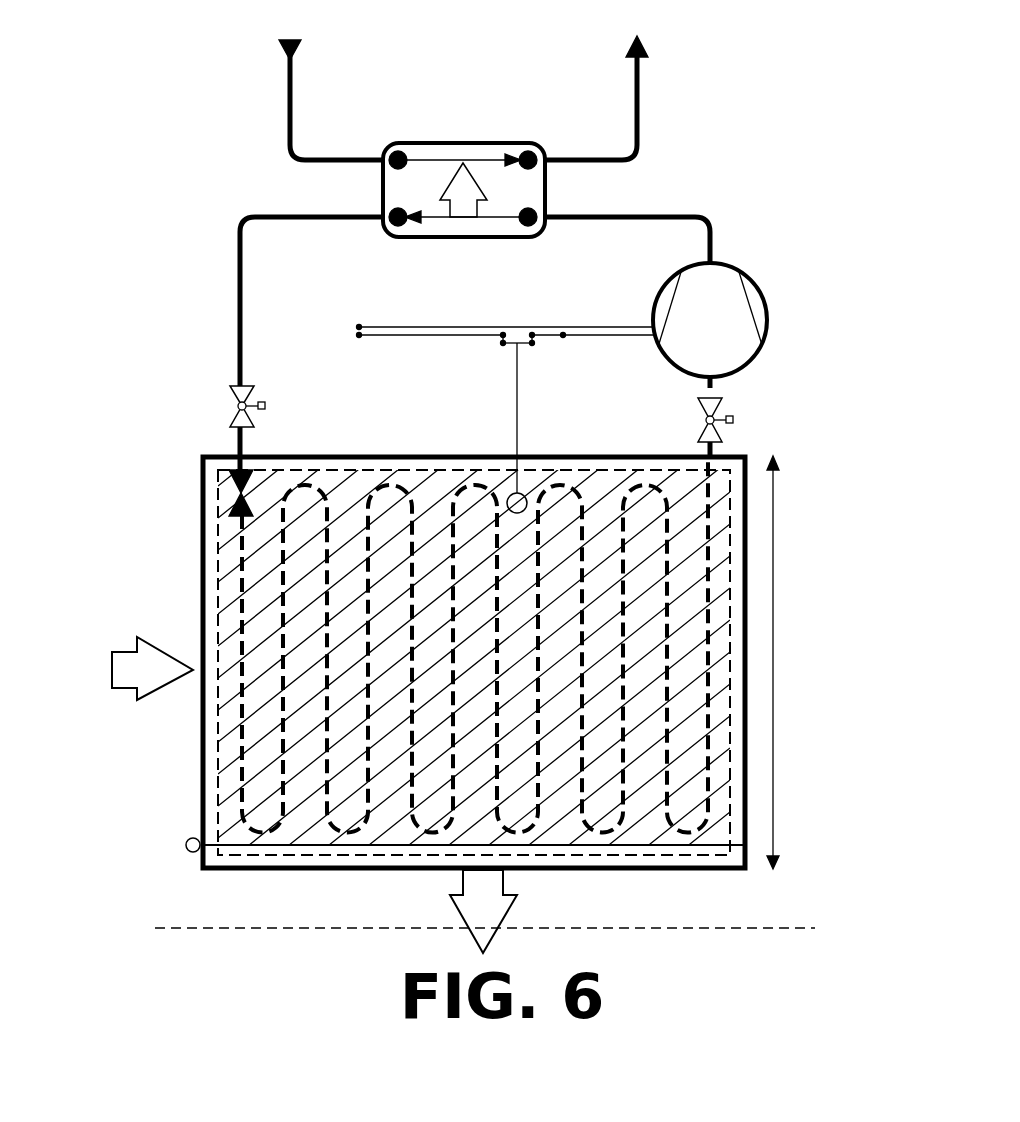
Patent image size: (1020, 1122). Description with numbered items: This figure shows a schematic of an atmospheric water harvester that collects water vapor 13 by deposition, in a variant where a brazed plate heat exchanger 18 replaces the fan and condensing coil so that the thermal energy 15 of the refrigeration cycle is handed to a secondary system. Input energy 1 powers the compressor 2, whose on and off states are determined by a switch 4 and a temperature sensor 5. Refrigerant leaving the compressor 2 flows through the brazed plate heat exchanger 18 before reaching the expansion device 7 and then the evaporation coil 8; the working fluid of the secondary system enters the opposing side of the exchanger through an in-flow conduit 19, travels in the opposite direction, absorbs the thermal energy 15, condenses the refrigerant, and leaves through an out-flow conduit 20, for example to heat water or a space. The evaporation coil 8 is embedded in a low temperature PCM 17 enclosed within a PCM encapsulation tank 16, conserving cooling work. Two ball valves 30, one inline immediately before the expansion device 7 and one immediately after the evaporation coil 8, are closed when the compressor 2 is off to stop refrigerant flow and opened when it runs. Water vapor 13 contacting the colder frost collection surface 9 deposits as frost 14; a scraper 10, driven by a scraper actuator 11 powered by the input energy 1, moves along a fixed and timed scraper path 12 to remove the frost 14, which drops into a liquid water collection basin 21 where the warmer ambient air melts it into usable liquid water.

The input energy 1 is at (356, 333).
The compressor 2 is at (742, 324).
The switch 4 is at (540, 345).
The temperature sensor 5 is at (512, 492).
The expansion device 7 is at (240, 468).
The evaporation coil 8 is at (360, 715).
The frost collection surface 9 is at (203, 823).
The scraper 10 is at (385, 846).
The scraper actuator 11 is at (186, 845).
The scraper path 12 is at (775, 690).
The water vapor 13 is at (152, 710).
The frost 14 is at (505, 912).
The thermal energy 15 is at (470, 183).
The PCM encapsulation tank 16 is at (205, 506).
The low temperature PCM 17 is at (218, 576).
The brazed plate heat exchanger 18 is at (385, 180).
The in-flow conduit 19 is at (290, 55).
The out-flow conduit 20 is at (647, 50).
The liquid water collection basin 21 is at (735, 928).
The ball valve 30 is at (238, 390).